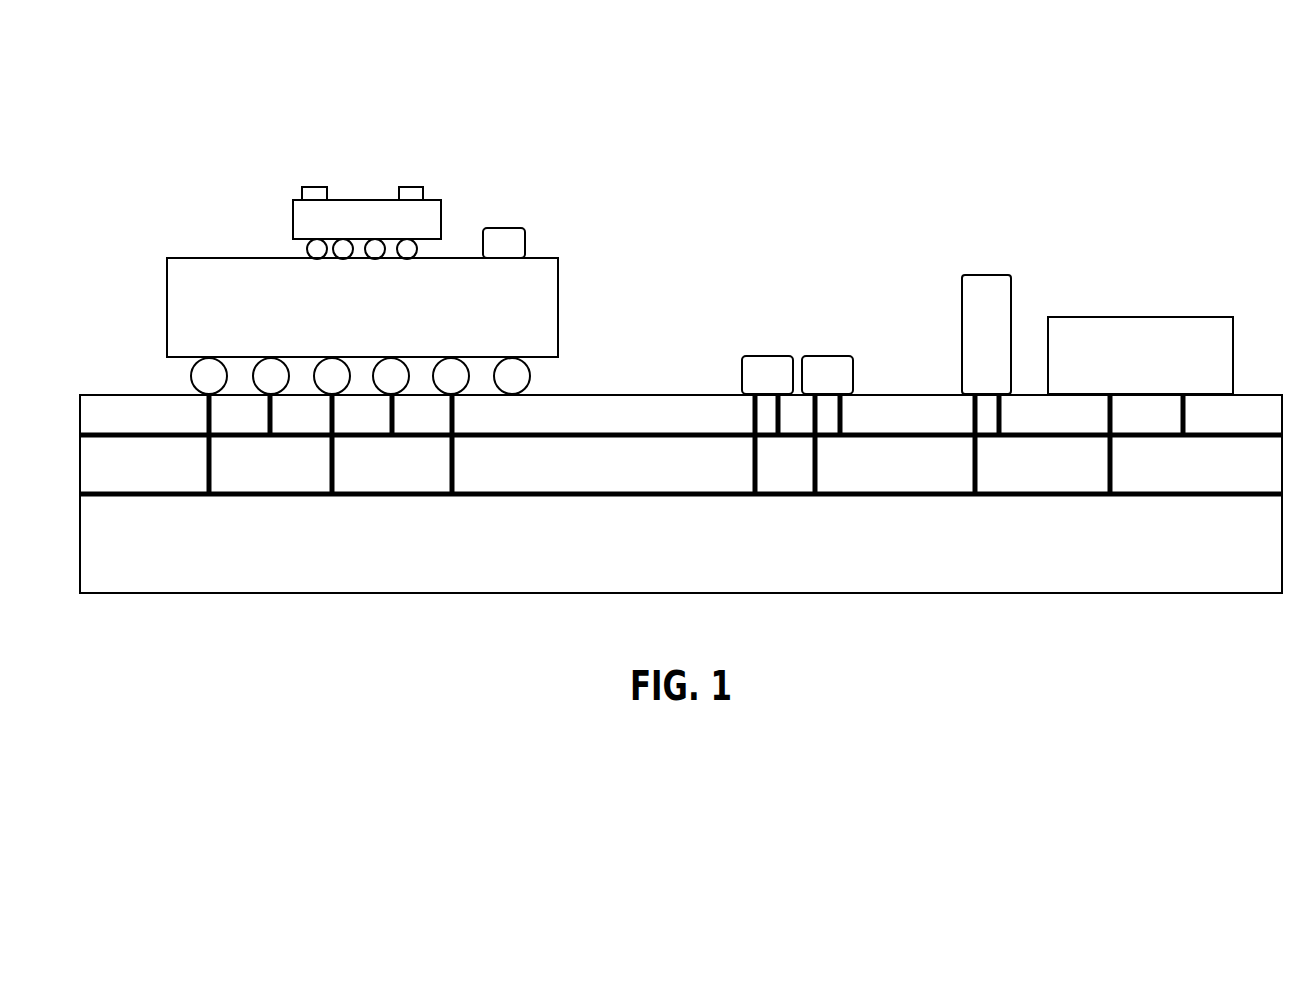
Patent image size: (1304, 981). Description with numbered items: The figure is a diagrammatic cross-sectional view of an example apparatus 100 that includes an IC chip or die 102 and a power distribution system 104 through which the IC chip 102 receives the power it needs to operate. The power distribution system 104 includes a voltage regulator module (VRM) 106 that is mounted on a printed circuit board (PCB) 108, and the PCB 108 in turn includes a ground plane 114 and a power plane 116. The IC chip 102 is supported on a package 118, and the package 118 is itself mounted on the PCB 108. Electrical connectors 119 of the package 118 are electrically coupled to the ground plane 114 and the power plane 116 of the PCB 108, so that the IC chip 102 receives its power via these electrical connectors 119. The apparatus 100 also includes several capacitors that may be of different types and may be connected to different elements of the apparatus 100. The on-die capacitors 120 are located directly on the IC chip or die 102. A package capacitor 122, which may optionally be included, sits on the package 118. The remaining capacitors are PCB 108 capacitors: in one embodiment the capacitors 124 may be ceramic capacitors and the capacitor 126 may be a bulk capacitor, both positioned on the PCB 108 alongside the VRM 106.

The apparatus 100 is at (976, 114).
The IC chip or die 102 is at (371, 181).
The power distribution system 104 is at (891, 256).
The voltage regulator module (VRM) 106 is at (1200, 317).
The printed circuit board (PCB) 108 is at (1226, 557).
The ground plane 114 is at (140, 497).
The power plane 116 is at (712, 433).
The package 118 is at (560, 298).
The electrical connectors 119 is at (307, 252).
The on-die capacitors 120 is at (302, 194).
The package capacitor 122 is at (525, 242).
The ceramic capacitors 124 is at (742, 362).
The bulk capacitor 126 is at (992, 275).